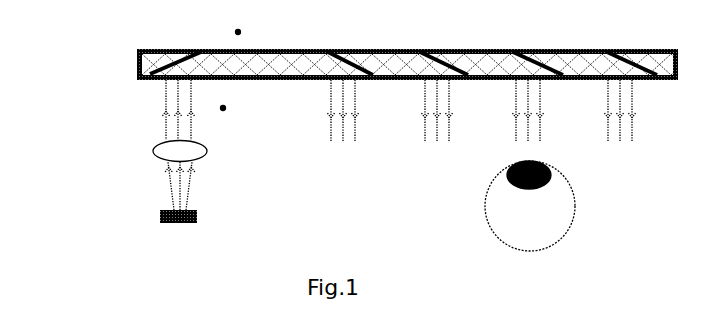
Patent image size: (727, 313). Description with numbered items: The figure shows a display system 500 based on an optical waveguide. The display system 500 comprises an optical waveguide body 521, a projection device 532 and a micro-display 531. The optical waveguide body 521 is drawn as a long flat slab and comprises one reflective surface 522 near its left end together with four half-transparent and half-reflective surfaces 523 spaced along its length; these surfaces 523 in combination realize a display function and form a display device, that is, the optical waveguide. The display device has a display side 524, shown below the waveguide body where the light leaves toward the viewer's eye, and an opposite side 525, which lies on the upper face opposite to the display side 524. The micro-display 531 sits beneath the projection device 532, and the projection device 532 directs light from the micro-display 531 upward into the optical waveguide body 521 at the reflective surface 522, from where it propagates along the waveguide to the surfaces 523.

The display system 500 is at (670, 24).
The optical waveguide body 521 is at (359, 59).
The reflective surface 522 is at (121, 37).
The half-transparent and half-reflective surface 523 is at (492, 46).
The display side 524 is at (270, 135).
The opposite side 525 is at (285, 18).
The micro-display 531 is at (119, 210).
The projection device 532 is at (124, 149).